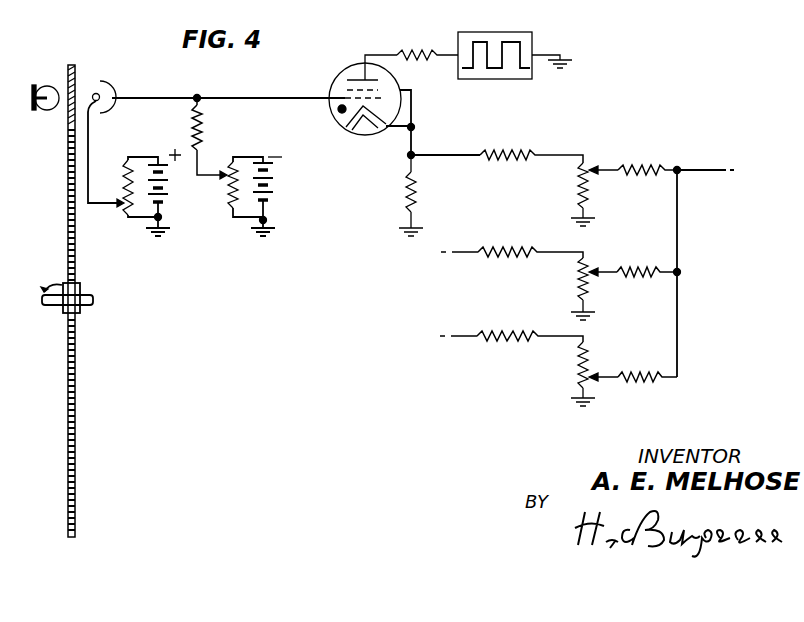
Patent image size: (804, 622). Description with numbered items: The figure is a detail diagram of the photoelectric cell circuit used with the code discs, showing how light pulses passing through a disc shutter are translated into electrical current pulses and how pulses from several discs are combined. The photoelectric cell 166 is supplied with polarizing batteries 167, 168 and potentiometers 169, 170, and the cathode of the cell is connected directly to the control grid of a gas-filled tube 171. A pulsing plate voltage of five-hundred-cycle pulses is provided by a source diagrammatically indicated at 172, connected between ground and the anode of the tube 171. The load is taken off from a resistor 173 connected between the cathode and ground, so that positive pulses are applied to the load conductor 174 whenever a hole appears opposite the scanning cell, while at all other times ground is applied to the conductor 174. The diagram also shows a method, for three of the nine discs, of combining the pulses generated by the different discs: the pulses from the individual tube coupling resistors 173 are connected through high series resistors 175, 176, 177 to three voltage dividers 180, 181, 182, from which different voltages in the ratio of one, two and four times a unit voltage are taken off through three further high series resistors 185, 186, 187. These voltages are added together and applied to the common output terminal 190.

The photoelectric cell 166 is at (104, 81).
The polarizing battery 167 is at (168, 197).
The polarizing battery 168 is at (275, 185).
The potentiometer 169 is at (122, 171).
The potentiometer 170 is at (237, 168).
The gas-filled tube 171 is at (333, 88).
The source of pulsing power supply 172 is at (498, 32).
The resistor 173 is at (416, 188).
The load conductor 174 is at (429, 154).
The high series resistor 175 is at (490, 150).
The high series resistor 176 is at (486, 247).
The high series resistor 177 is at (492, 331).
The voltage divider 180 is at (589, 186).
The voltage divider 181 is at (577, 290).
The voltage divider 182 is at (577, 366).
The high series resistor 185 is at (652, 165).
The high series resistor 186 is at (655, 267).
The high series resistor 187 is at (657, 372).
The common output terminal 190 is at (694, 170).